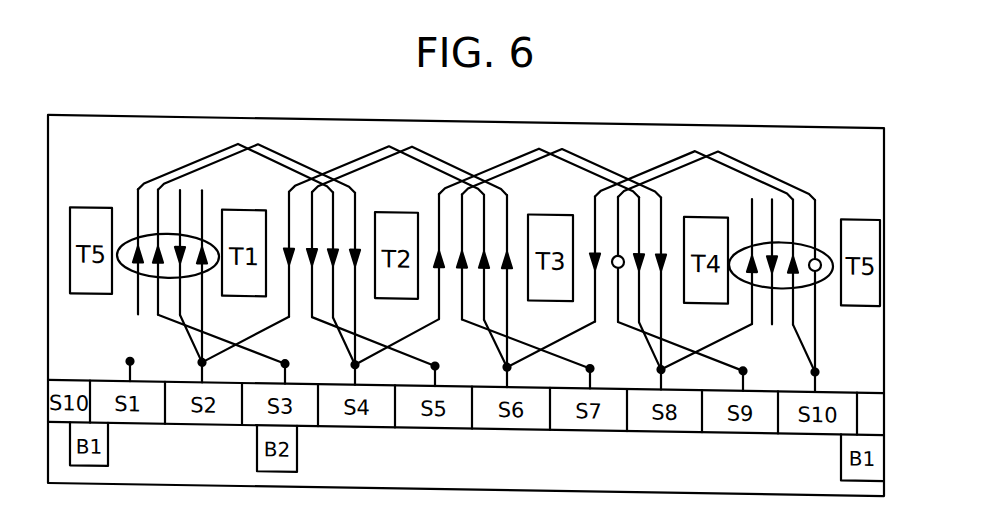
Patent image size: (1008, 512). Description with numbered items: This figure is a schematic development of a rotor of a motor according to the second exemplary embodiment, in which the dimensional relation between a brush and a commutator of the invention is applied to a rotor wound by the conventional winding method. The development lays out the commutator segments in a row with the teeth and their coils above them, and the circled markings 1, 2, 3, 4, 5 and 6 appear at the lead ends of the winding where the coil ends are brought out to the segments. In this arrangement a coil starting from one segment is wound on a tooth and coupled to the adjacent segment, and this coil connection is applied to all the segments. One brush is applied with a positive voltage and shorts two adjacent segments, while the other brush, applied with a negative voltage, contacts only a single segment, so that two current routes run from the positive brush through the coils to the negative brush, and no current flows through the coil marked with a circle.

The lead wire 1 is at (130, 360).
The lead wire 2 is at (130, 360).
The lead wire 3 is at (138, 313).
The lead wire 4 is at (470, 160).
The lead wire 5 is at (787, 325).
The lead wire 6 is at (492, 167).